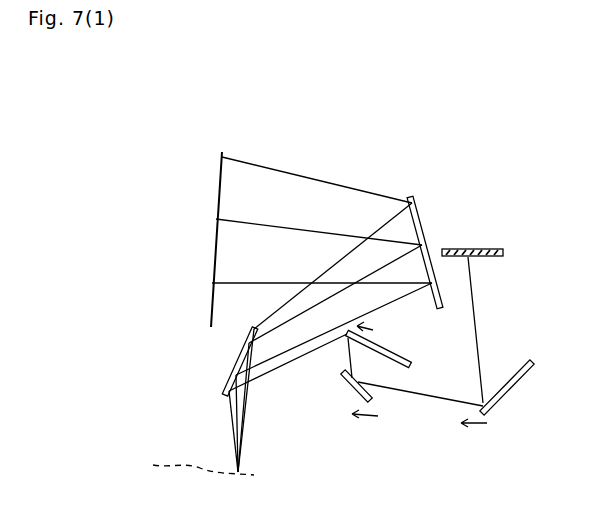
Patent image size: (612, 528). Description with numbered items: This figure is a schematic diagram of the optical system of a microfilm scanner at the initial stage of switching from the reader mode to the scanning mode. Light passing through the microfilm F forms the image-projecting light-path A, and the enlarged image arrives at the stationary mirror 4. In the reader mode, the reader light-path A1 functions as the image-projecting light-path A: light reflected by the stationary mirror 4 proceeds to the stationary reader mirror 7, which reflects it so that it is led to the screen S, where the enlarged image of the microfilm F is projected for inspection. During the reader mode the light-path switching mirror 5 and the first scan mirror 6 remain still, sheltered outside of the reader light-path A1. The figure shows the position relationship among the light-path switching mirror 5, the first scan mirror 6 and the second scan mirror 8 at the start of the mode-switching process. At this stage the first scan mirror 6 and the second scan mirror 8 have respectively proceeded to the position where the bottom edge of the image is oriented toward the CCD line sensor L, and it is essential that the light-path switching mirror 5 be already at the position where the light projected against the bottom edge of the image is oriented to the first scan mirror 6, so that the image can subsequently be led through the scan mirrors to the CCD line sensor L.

The reader light-path A1 is at (305, 178).
The stationary reader mirror 7 is at (416, 205).
The CCD line sensor L is at (480, 248).
The screen S is at (211, 304).
The stationary mirror 4 is at (232, 373).
The image-projecting light-path A is at (232, 418).
The microfilm F is at (193, 469).
The light-path switching mirror 5 is at (393, 351).
The first scan mirror 6 is at (343, 376).
The second scan mirror 8 is at (527, 374).